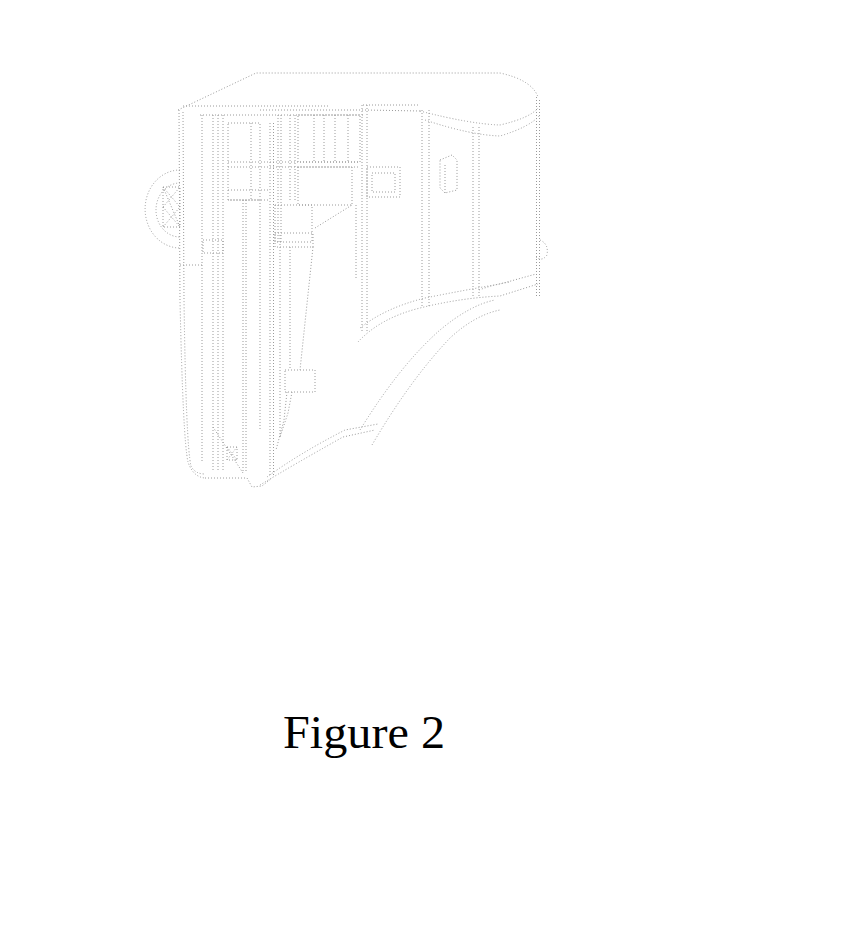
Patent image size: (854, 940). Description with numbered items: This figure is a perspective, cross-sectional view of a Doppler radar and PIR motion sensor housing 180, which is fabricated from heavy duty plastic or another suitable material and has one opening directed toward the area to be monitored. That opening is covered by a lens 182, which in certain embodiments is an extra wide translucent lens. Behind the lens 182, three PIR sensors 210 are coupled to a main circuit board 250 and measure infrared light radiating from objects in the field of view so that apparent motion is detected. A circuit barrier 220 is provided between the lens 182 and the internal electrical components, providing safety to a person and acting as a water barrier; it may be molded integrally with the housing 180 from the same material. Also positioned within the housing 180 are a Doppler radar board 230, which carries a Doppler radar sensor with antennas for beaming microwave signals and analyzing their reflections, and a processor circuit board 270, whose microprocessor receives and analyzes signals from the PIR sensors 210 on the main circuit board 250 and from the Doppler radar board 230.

The Doppler radar and PIR motion sensor housing 180 is at (346, 83).
The lens 182 is at (540, 168).
The PIR sensors 210 is at (401, 189).
The circuit barrier 220 is at (394, 271).
The Doppler radar board 230 is at (330, 300).
The main circuit board 250 is at (265, 173).
The processor circuit board 270 is at (227, 294).